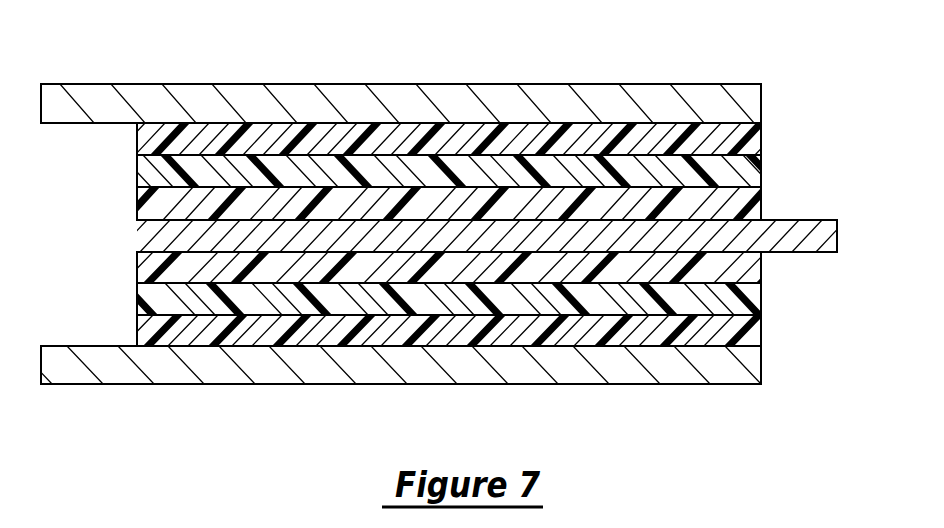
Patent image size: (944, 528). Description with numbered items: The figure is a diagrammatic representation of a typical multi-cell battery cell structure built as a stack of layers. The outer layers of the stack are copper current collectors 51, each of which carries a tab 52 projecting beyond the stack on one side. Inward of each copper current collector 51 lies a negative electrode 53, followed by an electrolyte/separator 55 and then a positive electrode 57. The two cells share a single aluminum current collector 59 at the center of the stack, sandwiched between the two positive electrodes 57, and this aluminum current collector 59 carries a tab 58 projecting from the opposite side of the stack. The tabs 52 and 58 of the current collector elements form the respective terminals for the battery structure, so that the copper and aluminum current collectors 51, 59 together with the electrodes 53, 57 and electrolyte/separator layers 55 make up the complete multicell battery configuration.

The copper current collector 51 is at (747, 107).
The tab 52 is at (80, 83).
The negative electrode 53 is at (747, 140).
The electrolyte/separator 55 is at (747, 173).
The positive electrode 57 is at (743, 268).
The tab 58 is at (820, 238).
The aluminum current collector 59 is at (147, 238).